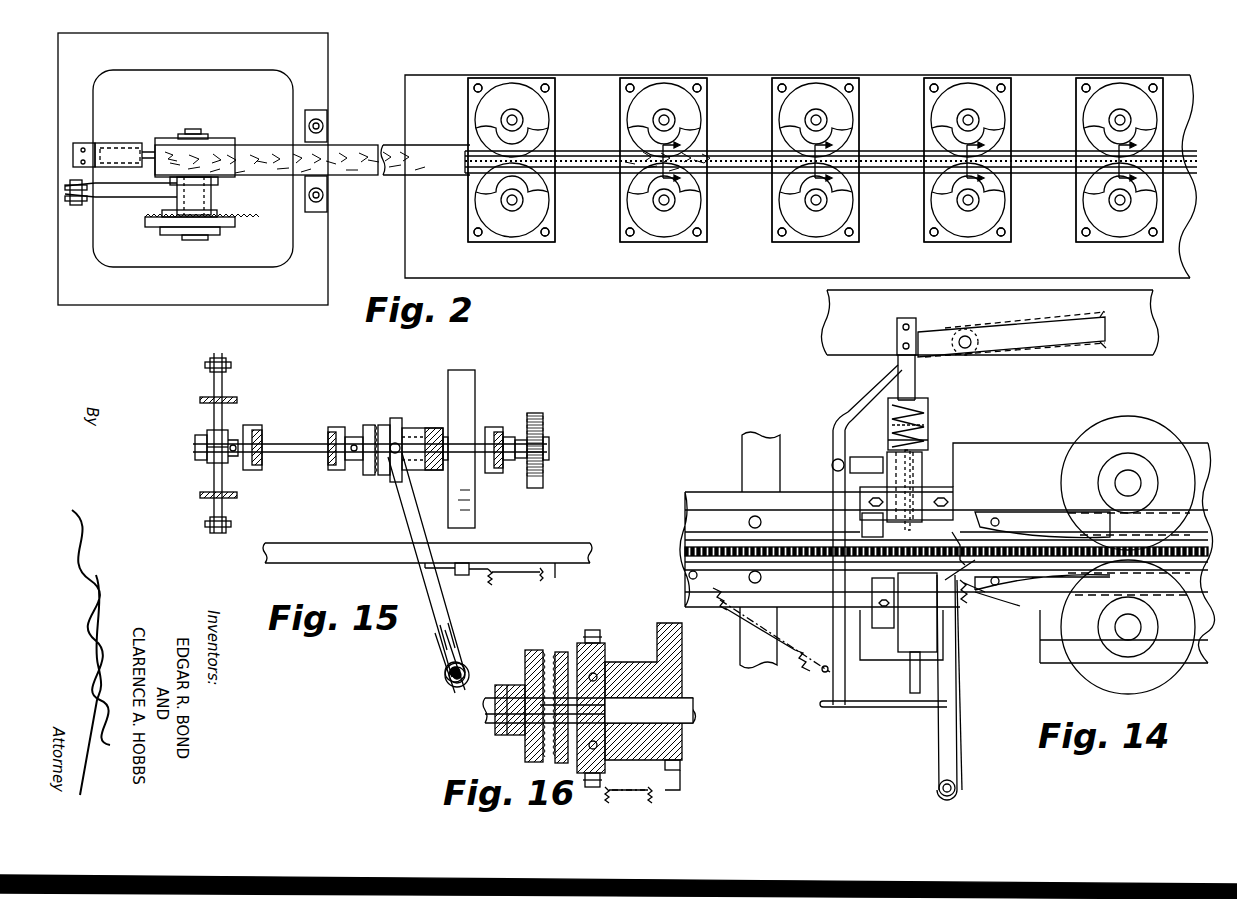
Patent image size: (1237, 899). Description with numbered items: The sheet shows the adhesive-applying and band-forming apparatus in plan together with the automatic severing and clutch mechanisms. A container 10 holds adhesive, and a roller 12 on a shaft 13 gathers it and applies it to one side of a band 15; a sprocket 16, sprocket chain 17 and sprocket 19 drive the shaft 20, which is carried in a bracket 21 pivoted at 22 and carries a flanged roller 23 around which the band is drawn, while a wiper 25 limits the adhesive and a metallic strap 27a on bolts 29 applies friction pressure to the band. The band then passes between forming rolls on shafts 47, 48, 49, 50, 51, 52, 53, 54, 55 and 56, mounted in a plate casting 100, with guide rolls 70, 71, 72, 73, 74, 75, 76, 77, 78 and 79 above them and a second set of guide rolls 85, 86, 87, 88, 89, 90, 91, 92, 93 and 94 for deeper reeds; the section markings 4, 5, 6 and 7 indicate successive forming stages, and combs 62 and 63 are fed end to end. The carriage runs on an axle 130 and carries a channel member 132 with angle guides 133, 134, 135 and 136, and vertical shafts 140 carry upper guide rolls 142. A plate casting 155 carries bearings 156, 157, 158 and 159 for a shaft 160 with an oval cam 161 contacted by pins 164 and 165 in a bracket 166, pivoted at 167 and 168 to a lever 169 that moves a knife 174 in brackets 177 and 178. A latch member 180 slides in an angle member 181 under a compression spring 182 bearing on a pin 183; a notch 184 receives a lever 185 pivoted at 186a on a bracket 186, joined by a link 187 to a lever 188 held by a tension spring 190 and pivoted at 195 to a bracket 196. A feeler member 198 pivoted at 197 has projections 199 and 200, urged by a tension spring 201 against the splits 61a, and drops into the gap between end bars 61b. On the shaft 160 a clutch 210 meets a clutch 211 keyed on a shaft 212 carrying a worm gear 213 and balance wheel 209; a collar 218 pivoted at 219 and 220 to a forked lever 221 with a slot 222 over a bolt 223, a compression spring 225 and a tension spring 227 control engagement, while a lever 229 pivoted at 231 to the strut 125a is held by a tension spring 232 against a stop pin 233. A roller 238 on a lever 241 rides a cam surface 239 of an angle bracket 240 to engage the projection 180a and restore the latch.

In FIG. 2, the container 10 is at (295, 45).
In FIG. 2, the roller 12 is at (150, 146).
In FIG. 2, the shaft 13 is at (190, 240).
In FIG. 2, the band 15 is at (388, 186).
In FIG. 14, the band 15 is at (715, 540).
In FIG. 2, the sprocket 16 is at (165, 232).
In FIG. 15, the sprocket 16 is at (350, 422).
In FIG. 2, the sprocket chain 17 is at (235, 223).
In FIG. 2, the sprocket 19 is at (216, 235).
In FIG. 2, the shaft 20 is at (194, 130).
In FIG. 2, the bracket 21 is at (124, 195).
In FIG. 2, the pivot 22 is at (78, 205).
In FIG. 2, the flanged roller 23 is at (208, 137).
In FIG. 2, the wiper 25 is at (92, 146).
In FIG. 2, the metallic strap 27a is at (312, 140).
In FIG. 2, the bolts 29 is at (314, 118).
In FIG. 2, the shaft 47 is at (513, 110).
In FIG. 2, the shaft 48 is at (512, 212).
In FIG. 2, the shaft 49 is at (666, 113).
In FIG. 2, the shaft 50 is at (664, 212).
In FIG. 2, the shaft 51 is at (818, 113).
In FIG. 2, the shaft 52 is at (816, 212).
In FIG. 2, the shaft 53 is at (970, 113).
In FIG. 2, the shaft 54 is at (968, 212).
In FIG. 2, the shaft 55 is at (1122, 113).
In FIG. 2, the shaft 56 is at (1120, 212).
In FIG. 2, the comb 62 is at (1195, 156).
In FIG. 2, the comb 63 is at (457, 148).
In FIG. 2, the guide roll 70 is at (545, 131).
In FIG. 2, the guide roll 71 is at (545, 189).
In FIG. 2, the guide roll 72 is at (698, 133).
In FIG. 2, the guide roll 73 is at (698, 190).
In FIG. 2, the guide roll 74 is at (851, 134).
In FIG. 2, the guide roll 75 is at (851, 191).
In FIG. 2, the guide roll 76 is at (1003, 135).
In FIG. 2, the guide roll 77 is at (1003, 191).
In FIG. 2, the guide roll 78 is at (1155, 135).
In FIG. 2, the guide roll 79 is at (1155, 191).
In FIG. 2, the guide roll 85 is at (546, 105).
In FIG. 2, the guide roll 86 is at (547, 218).
In FIG. 2, the guide roll 87 is at (698, 109).
In FIG. 2, the guide roll 88 is at (700, 220).
In FIG. 2, the guide roll 89 is at (851, 110).
In FIG. 2, the guide roll 90 is at (852, 222).
In FIG. 2, the guide roll 91 is at (1003, 112).
In FIG. 2, the guide roll 92 is at (1004, 222).
In FIG. 2, the guide roll 93 is at (1155, 112).
In FIG. 2, the guide roll 94 is at (1156, 222).
In FIG. 2, the plate casting 100 is at (757, 82).
In FIG. 2, the section line 4 is at (676, 165).
In FIG. 2, the section line 5 is at (828, 165).
In FIG. 2, the section line 6 is at (980, 165).
In FIG. 2, the section line 7 is at (1133, 165).
In FIG. 15, the longitudinal strut 125a is at (332, 545).
In FIG. 14, the axle 130 is at (760, 550).
In FIG. 14, the channel member 132 is at (708, 490).
In FIG. 14, the angle guide 133 is at (752, 512).
In FIG. 14, the angle guide 134 is at (793, 588).
In FIG. 14, the angle guide 135 is at (1038, 512).
In FIG. 14, the angle guide 136 is at (1062, 595).
In FIG. 14, the vertical shaft 140 is at (1130, 475).
In FIG. 14, the upper guide roll 142 is at (1150, 423).
In FIG. 14, the plate casting 155 is at (1033, 443).
In FIG. 15, the bearing 156 is at (252, 425).
In FIG. 15, the bearing 157 is at (333, 427).
In FIG. 15, the bearing 158 is at (423, 475).
In FIG. 16, the bearing 158 is at (683, 738).
In FIG. 15, the bearing 159 is at (490, 427).
In FIG. 15, the shaft 160 is at (305, 445).
In FIG. 16, the shaft 160 is at (492, 720).
In FIG. 15, the oval shaped cam 161 is at (205, 432).
In FIG. 15, the pin 164 is at (224, 385).
In FIG. 15, the pin 165 is at (232, 465).
In FIG. 15, the bracket 166 is at (200, 398).
In FIG. 15, the pivot 167 is at (210, 364).
In FIG. 15, the pivot 168 is at (210, 526).
In FIG. 15, the lever 169 is at (224, 362).
In FIG. 14, the knife 174 is at (910, 672).
In FIG. 14, the bracket 177 is at (924, 476).
In FIG. 14, the bracket 178 is at (917, 612).
In FIG. 14, the latch member 180 is at (916, 374).
In FIG. 14, the projection 180a is at (915, 322).
In FIG. 14, the angle member 181 is at (930, 414).
In FIG. 14, the compression spring 182 is at (927, 438).
In FIG. 14, the pin 183 is at (892, 442).
In FIG. 14, the notch 184 is at (878, 392).
In FIG. 14, the lever 185 is at (844, 412).
In FIG. 14, the bracket 186 is at (866, 466).
In FIG. 14, the pivot 186a is at (833, 462).
In FIG. 14, the link 187 is at (882, 708).
In FIG. 14, the lever 188 is at (940, 715).
In FIG. 14, the tension spring 190 is at (713, 605).
In FIG. 14, the pivot 195 is at (938, 785).
In FIG. 14, the bracket 196 is at (962, 752).
In FIG. 14, the pivot 197 is at (978, 605).
In FIG. 14, the feeler member 198 is at (997, 583).
In FIG. 14, the projection 199 is at (876, 525).
In FIG. 14, the projection 200 is at (891, 619).
In FIG. 14, the tension spring 201 is at (990, 597).
In FIG. 15, the balance wheel 209 is at (476, 518).
In FIG. 15, the clutch 210 is at (373, 424).
In FIG. 16, the clutch 210 is at (533, 652).
In FIG. 15, the clutch 211 is at (392, 424).
In FIG. 16, the clutch 211 is at (568, 644).
In FIG. 15, the shaft 212 is at (512, 470).
In FIG. 16, the shaft 212 is at (694, 708).
In FIG. 15, the worm gear 213 is at (536, 413).
In FIG. 15, the collar 218 is at (404, 426).
In FIG. 16, the collar 218 is at (604, 650).
In FIG. 15, the pivot 219 is at (400, 447).
In FIG. 16, the pivot 219 is at (594, 630).
In FIG. 16, the pivot 220 is at (590, 788).
In FIG. 15, the forked lever 221 is at (412, 515).
In FIG. 16, the forked lever 221 is at (600, 632).
In FIG. 15, the slot 222 is at (446, 636).
In FIG. 15, the bolt 223 is at (449, 676).
In FIG. 15, the compression spring 225 is at (465, 670).
In FIG. 16, the compression spring 225 is at (466, 674).
In FIG. 16, the tension spring 227 is at (658, 794).
In FIG. 15, the lever 229 is at (495, 578).
In FIG. 15, the pivot 231 is at (466, 577).
In FIG. 15, the tension spring 232 is at (547, 578).
In FIG. 15, the stop pin 233 is at (338, 583).
In FIG. 14, the roller 238 is at (976, 330).
In FIG. 14, the cam surface 239 is at (1024, 328).
In FIG. 14, the angle bracket 240 is at (1148, 309).
In FIG. 14, the lever 241 is at (1108, 318).
In FIG. 14, the splits 61a is at (682, 548).
In FIG. 14, the end bars 61b is at (930, 551).